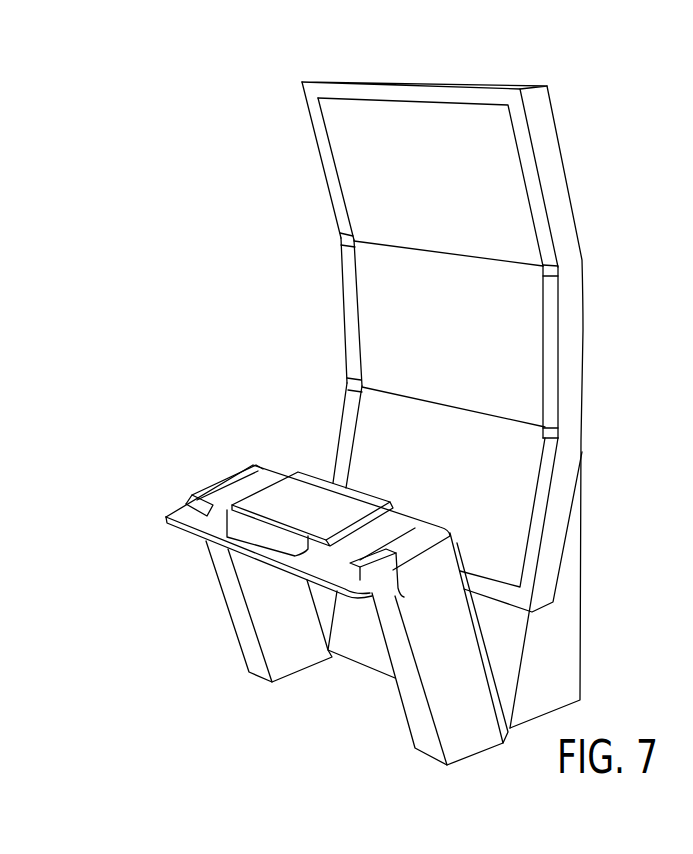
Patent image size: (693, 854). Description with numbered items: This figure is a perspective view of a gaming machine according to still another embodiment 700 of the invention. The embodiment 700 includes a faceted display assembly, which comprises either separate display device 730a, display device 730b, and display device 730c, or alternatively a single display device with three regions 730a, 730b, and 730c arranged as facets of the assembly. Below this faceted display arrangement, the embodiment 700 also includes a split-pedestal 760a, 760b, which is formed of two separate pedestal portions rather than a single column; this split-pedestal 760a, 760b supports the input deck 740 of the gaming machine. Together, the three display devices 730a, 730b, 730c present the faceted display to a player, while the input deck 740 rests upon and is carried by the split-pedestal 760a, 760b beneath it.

The embodiment 700 is at (290, 370).
The display device 730a is at (525, 183).
The display device 730b is at (543, 350).
The display device 730c is at (532, 515).
The input deck 740 is at (173, 511).
The split-pedestal 760a is at (227, 605).
The split-pedestal 760b is at (403, 703).